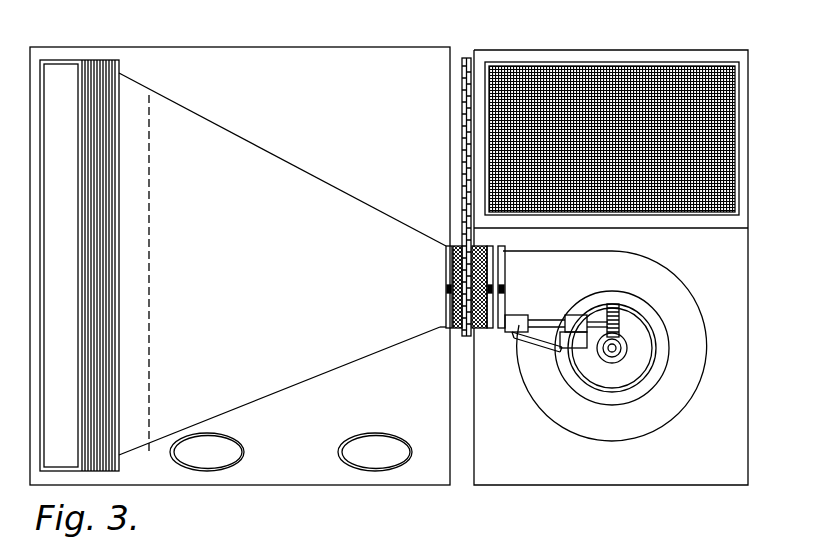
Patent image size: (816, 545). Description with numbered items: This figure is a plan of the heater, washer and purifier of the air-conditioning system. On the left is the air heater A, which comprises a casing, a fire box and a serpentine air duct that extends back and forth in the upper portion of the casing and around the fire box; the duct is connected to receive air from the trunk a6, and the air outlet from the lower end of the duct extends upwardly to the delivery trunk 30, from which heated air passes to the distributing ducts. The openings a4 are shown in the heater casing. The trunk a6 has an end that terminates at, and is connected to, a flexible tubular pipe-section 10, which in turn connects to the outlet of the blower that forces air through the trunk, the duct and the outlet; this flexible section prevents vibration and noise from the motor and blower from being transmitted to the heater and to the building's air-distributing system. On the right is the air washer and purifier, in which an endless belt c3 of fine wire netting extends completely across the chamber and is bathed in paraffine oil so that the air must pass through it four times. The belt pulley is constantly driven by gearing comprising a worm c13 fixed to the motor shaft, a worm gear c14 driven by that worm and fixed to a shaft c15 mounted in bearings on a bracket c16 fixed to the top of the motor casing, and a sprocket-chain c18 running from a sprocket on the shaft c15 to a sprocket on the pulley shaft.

The air heater A is at (240, 266).
The delivery trunk 30 is at (79, 265).
The openings a4 is at (362, 457).
The trunk a6 is at (437, 287).
The flexible tubular pipe-section 10 is at (506, 247).
The endless belt c3 is at (641, 74).
The sprocket-chain c18 is at (460, 76).
The worm c13 is at (616, 355).
The worm gear c14 is at (617, 312).
The shaft c15 is at (541, 320).
The bracket c16 is at (563, 347).